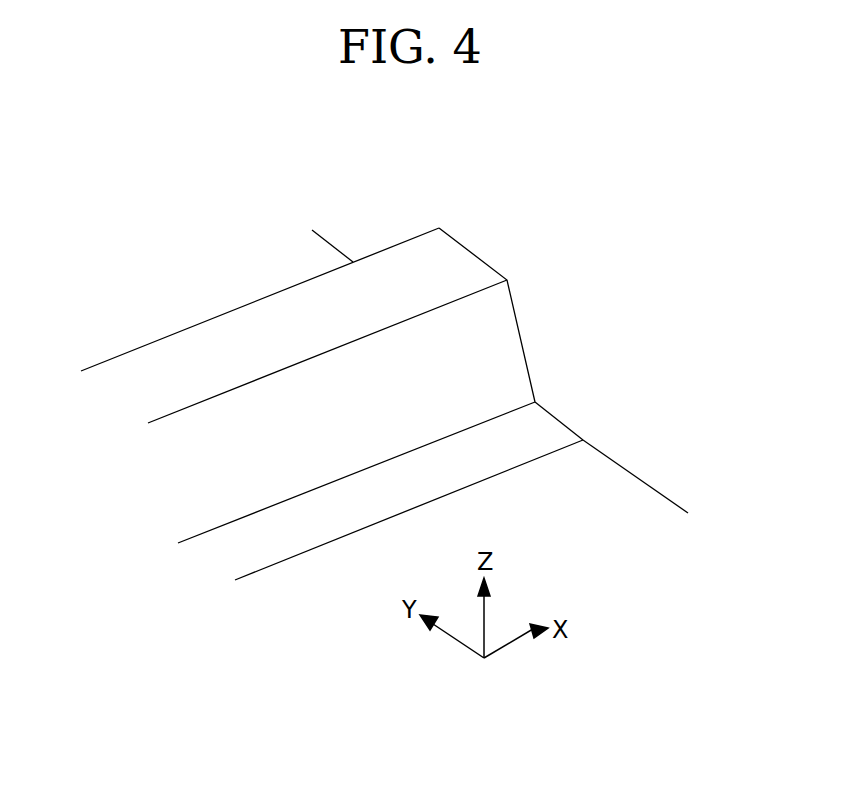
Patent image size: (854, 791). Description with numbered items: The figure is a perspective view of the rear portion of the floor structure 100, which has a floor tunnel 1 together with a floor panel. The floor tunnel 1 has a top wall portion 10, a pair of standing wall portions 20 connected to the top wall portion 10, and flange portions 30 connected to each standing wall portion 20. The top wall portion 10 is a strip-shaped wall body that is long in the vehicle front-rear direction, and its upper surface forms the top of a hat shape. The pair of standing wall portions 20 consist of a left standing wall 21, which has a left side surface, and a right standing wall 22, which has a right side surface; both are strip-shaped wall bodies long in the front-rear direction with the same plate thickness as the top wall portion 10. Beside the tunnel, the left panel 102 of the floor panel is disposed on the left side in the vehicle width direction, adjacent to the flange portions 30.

The floor tunnel 1 is at (157, 280).
The floor structure 100 is at (578, 167).
The top wall portion 10 is at (220, 328).
The right standing wall 22 is at (303, 300).
The standing wall portions 20 is at (290, 472).
The left standing wall 21 is at (223, 543).
The flange portions 30 is at (477, 450).
The left panel 102 is at (608, 528).